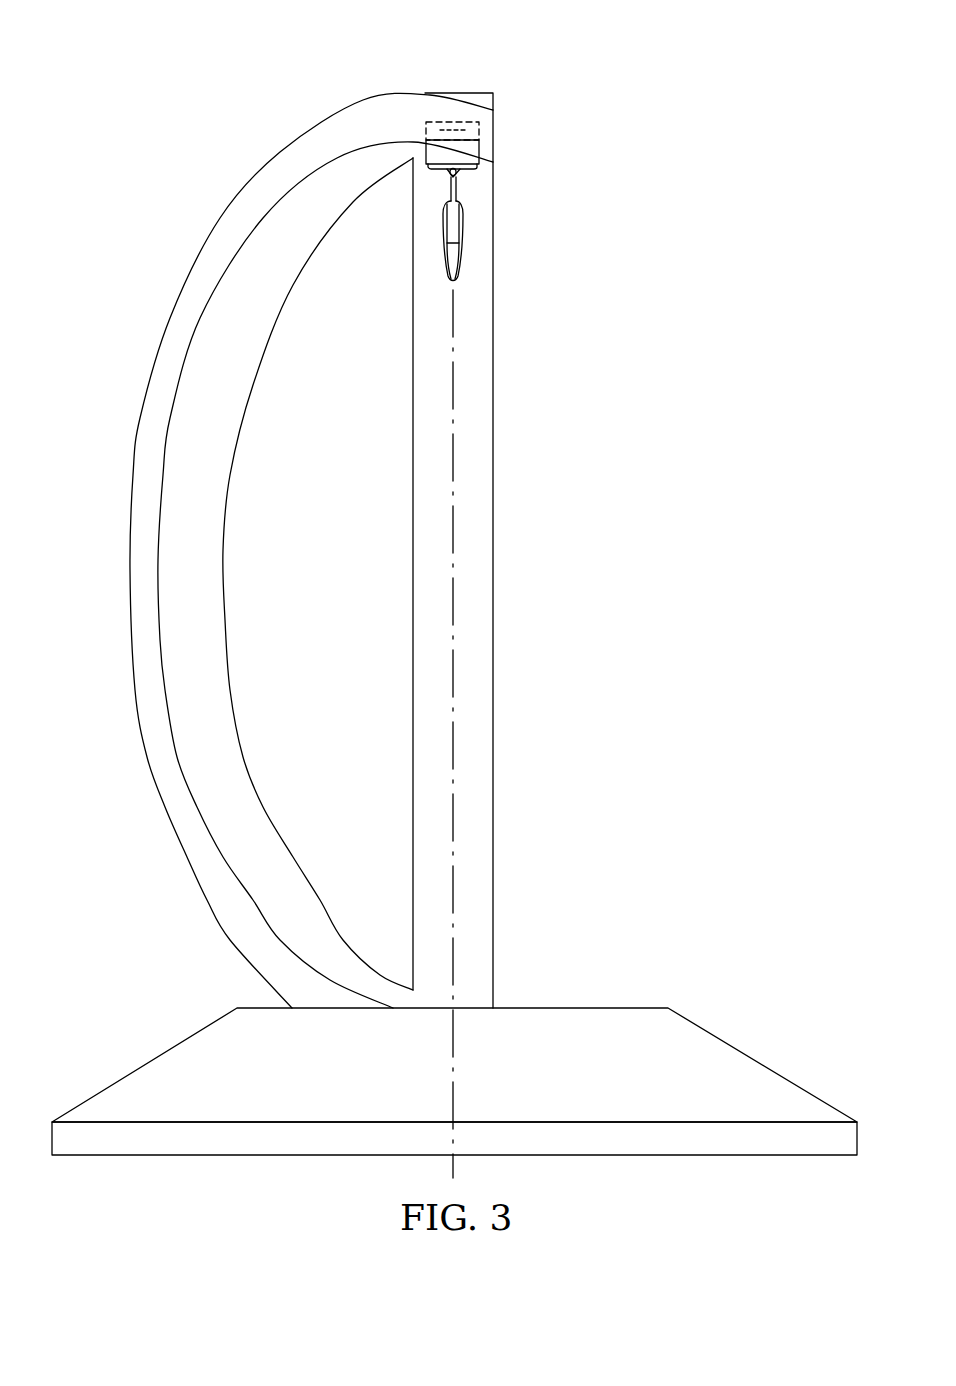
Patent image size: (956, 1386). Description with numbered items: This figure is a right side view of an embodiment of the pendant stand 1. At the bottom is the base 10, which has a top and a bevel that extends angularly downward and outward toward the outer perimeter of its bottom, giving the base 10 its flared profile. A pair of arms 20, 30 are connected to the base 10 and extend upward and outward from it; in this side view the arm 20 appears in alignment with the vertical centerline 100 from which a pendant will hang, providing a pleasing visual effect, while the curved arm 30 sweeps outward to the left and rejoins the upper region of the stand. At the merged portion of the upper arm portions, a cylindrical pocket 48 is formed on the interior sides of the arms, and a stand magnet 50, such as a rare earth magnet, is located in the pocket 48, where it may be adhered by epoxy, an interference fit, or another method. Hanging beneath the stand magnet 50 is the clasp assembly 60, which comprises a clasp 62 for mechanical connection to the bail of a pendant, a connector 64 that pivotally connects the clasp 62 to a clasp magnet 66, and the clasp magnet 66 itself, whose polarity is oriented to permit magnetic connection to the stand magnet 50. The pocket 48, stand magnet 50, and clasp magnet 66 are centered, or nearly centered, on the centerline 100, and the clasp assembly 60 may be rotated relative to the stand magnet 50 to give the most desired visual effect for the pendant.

The pendant stand 1 is at (252, 97).
The base 10 is at (733, 1033).
The arm 20 is at (506, 473).
The arm 30 is at (127, 491).
The cylindrical pocket 48 is at (452, 120).
The stand magnet 50 is at (480, 130).
The clasp assembly 60 is at (474, 231).
The clasp 62 is at (463, 251).
The connector 64 is at (450, 185).
The clasp magnet 66 is at (478, 165).
The vertical centerline 100 is at (455, 633).